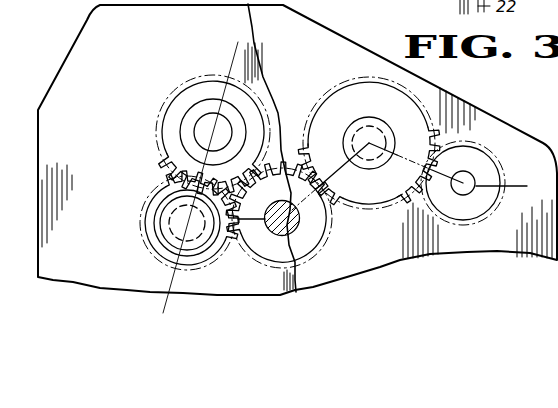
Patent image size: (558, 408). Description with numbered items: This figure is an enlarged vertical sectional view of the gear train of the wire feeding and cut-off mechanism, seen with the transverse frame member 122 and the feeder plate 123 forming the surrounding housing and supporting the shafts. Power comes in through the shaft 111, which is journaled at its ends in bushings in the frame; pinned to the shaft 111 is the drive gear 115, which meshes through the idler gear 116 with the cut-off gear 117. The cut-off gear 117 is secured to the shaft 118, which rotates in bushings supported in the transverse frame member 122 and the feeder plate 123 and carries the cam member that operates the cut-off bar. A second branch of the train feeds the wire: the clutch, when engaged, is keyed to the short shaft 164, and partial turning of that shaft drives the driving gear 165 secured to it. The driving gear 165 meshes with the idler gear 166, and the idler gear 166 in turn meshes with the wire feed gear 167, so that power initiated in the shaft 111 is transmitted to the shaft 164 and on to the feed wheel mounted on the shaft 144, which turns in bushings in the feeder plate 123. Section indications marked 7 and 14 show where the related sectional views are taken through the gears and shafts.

The section line 7- 7 is at (255, 222).
The section line 14- 14 is at (233, 50).
The shaft 111 is at (278, 205).
The drive gear 115 is at (270, 253).
The idler gear 116 is at (153, 232).
The cut-off gear 117 is at (173, 160).
The shaft 118 is at (205, 127).
The transverse frame member 122 is at (62, 118).
The feeder plate 123 is at (467, 112).
The shaft 144 is at (467, 173).
The short shaft 164 is at (302, 228).
The driving gear 165 is at (323, 230).
The idler gear 166 is at (325, 118).
The wire feed gear 167 is at (492, 174).